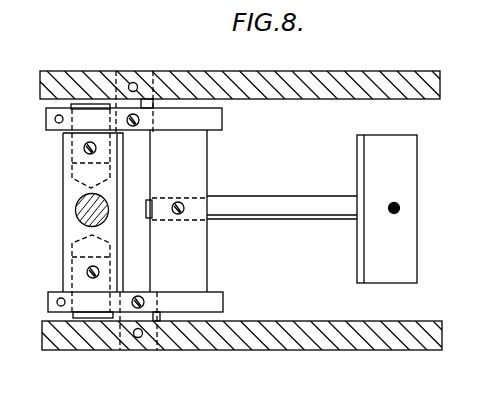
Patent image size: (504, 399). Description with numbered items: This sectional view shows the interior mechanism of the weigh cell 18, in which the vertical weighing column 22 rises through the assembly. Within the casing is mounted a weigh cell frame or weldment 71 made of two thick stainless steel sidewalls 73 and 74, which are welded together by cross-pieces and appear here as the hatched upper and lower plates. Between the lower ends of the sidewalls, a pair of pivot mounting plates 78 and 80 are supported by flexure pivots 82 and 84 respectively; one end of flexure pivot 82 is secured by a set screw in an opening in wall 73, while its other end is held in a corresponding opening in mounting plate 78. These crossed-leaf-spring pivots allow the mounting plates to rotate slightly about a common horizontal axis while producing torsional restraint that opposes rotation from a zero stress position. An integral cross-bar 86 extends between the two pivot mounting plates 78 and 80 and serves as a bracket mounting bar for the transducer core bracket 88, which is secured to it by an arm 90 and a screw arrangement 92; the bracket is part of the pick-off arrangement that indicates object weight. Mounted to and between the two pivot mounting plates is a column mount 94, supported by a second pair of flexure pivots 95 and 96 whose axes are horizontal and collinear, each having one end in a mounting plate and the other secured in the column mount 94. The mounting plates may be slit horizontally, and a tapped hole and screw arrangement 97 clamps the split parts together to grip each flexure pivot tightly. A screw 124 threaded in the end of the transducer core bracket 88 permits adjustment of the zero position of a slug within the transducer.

The weigh cell 18 is at (358, 349).
The vertical weighing column 22 is at (82, 213).
The weigh cell frame or weldment 71 is at (418, 48).
The sidewall 73 is at (342, 91).
The sidewall 74 is at (308, 320).
The pivot mounting plate 78 is at (218, 119).
The pivot mounting plate 80 is at (221, 302).
The flexure pivot 82 is at (145, 103).
The flexure pivot 84 is at (163, 317).
The integral cross-bar 86 is at (200, 158).
The transducer core bracket 88 is at (407, 164).
The arm 90 is at (302, 197).
The screw arrangement 92 is at (186, 220).
The column mount 94 is at (68, 188).
The flexure pivot 95 is at (89, 105).
The flexure pivot 96 is at (100, 315).
The tapped hole and screw arrangement 97 is at (55, 119).
The screw 124 is at (400, 207).